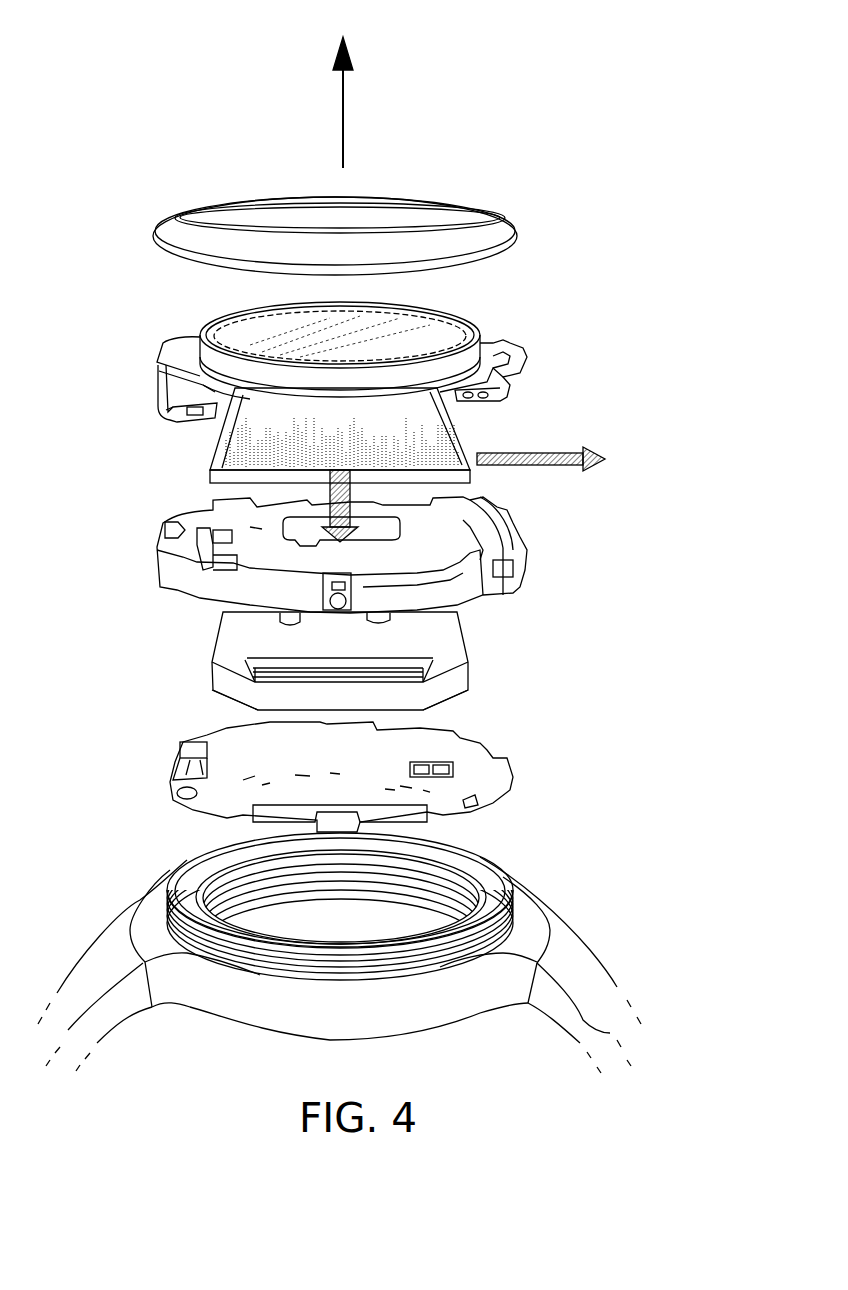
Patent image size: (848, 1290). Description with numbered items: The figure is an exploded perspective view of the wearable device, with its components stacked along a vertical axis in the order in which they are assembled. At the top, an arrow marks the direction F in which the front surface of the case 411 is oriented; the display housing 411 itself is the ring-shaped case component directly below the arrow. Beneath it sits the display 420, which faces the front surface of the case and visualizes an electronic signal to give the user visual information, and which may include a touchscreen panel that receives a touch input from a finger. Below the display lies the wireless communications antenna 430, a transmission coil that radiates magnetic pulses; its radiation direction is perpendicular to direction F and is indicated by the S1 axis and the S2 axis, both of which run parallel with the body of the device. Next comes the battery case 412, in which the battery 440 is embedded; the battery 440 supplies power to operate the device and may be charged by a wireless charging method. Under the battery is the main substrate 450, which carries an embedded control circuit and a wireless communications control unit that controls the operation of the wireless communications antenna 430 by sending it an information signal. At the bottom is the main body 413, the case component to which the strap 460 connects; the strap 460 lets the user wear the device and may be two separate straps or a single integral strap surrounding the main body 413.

The display housing 411 is at (517, 231).
The display 420 is at (523, 357).
The wireless communications antenna 430 is at (475, 428).
The battery case 412 is at (525, 553).
The battery 440 is at (455, 648).
The main substrate 450 is at (513, 780).
The main body 413 is at (530, 908).
The strap 460 is at (590, 968).
The S1 axis S1 is at (340, 518).
The S2 axis S2 is at (557, 460).
The direction F is at (343, 89).